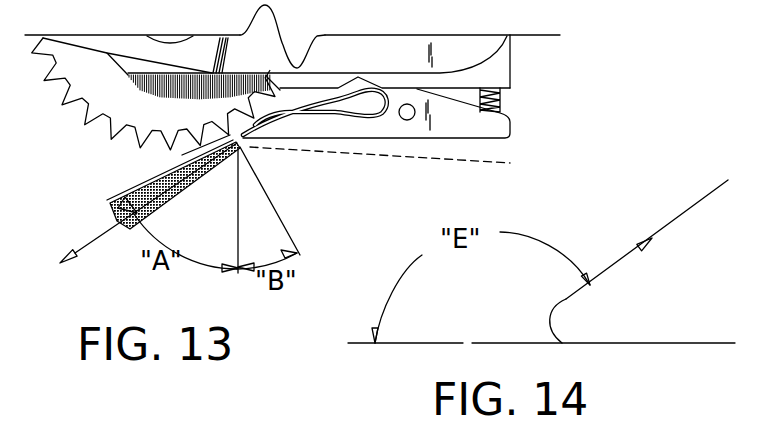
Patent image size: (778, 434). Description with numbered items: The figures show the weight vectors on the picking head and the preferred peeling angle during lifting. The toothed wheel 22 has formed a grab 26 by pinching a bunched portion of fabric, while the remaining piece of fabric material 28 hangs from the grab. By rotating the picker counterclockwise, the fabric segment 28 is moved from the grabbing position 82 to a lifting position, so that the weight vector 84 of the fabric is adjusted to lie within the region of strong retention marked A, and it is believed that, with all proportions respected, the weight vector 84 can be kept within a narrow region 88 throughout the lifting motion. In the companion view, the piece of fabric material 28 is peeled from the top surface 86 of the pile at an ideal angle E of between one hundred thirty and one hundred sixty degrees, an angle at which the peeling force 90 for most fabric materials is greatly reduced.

In FIG. 13, the toothed wheel 22 is at (110, 126).
In FIG. 13, the grab 26 is at (357, 107).
In FIG. 14, the piece of fabric material 28 is at (698, 210).
In FIG. 13, the grabbing position 82 is at (405, 156).
In FIG. 13, the weight vector 84 is at (90, 241).
In FIG. 14, the top surface 86 is at (658, 342).
In FIG. 13, the narrow region 88 is at (110, 213).
In FIG. 14, the peeling force 90 is at (615, 268).